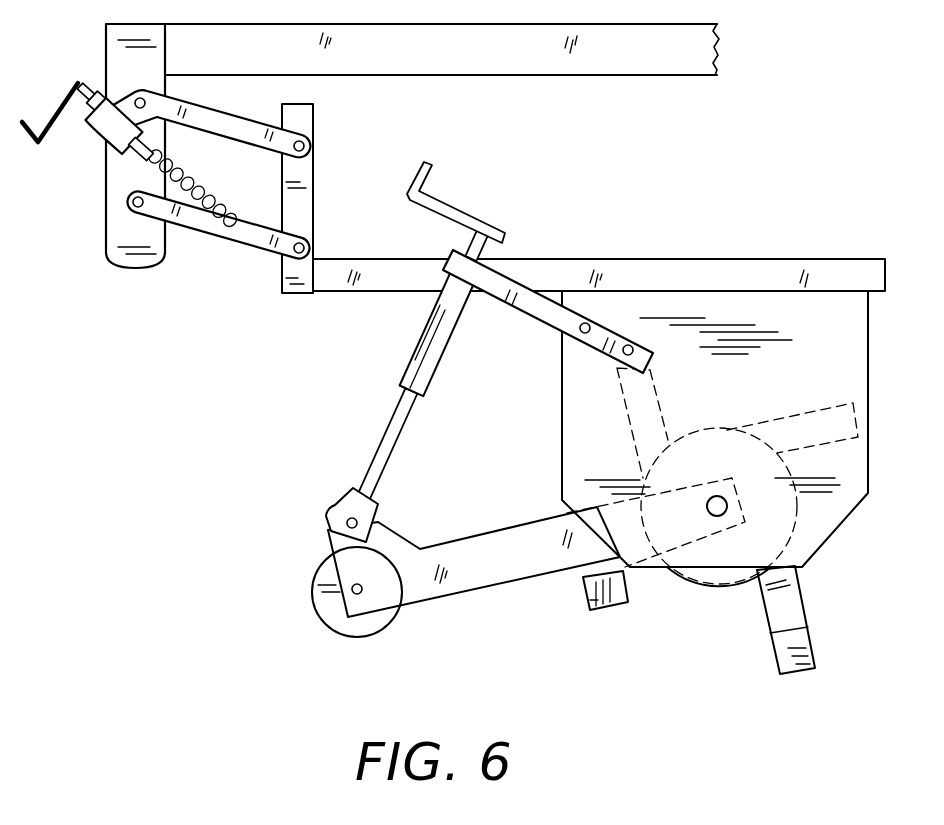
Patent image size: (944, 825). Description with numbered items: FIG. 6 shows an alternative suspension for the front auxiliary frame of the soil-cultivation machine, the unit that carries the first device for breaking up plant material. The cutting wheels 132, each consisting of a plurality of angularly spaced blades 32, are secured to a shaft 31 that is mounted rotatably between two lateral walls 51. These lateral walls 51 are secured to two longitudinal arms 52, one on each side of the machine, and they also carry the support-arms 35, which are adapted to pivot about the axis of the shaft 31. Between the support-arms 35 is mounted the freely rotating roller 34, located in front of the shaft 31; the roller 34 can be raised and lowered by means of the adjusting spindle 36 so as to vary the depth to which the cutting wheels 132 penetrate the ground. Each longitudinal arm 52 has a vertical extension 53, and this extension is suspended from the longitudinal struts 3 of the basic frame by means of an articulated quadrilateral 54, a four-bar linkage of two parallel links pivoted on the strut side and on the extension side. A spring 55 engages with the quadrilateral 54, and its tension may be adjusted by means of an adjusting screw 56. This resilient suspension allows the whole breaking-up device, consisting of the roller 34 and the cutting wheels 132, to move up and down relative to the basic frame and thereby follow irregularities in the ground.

The intermediate strut 3 is at (624, 55).
The shaft 31 is at (728, 507).
The blade 32 is at (590, 600).
The roller 34 is at (320, 598).
The support-arm 35 is at (474, 571).
The adjusting spindle 36 is at (417, 362).
The lateral wall 51 is at (757, 308).
The longitudinal arm 52 is at (590, 268).
The vertical extension 53 is at (308, 190).
The articulated quadrilateral 54 is at (218, 267).
The spring 55 is at (197, 186).
The adjusting screw 56 is at (78, 107).
The cutting wheel 132 is at (725, 624).